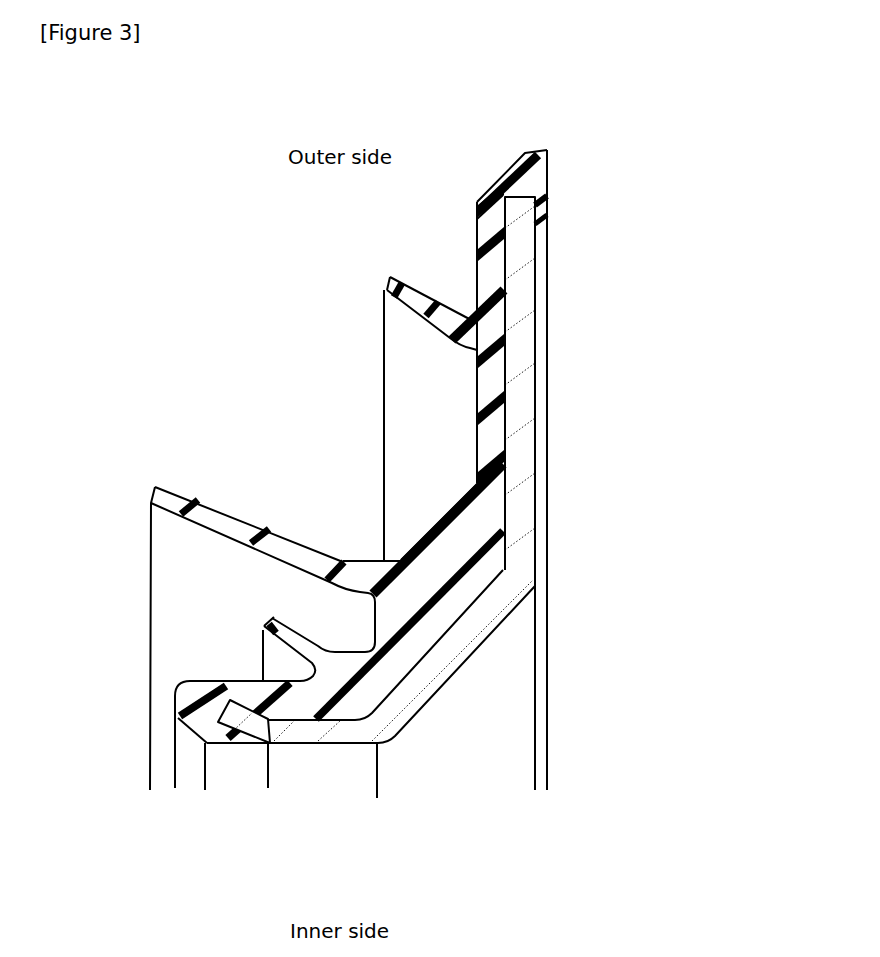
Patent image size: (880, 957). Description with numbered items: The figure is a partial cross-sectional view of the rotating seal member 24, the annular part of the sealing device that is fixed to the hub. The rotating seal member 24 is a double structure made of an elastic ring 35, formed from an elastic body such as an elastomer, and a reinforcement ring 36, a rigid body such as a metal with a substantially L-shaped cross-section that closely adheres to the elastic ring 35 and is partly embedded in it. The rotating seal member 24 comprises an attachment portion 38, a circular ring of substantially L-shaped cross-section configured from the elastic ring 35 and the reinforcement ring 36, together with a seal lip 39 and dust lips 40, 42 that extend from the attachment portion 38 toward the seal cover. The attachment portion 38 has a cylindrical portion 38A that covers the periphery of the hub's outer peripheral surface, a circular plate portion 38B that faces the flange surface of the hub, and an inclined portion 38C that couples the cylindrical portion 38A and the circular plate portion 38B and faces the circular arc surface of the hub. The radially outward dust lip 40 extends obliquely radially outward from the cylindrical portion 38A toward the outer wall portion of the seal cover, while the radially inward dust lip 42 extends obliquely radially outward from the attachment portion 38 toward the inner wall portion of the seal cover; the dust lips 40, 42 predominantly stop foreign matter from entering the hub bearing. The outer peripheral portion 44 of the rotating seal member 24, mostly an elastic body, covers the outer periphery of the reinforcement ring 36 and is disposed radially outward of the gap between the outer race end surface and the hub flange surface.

The rotating seal member 24 is at (562, 500).
The elastic ring 35 is at (478, 439).
The reinforcement ring 36 is at (527, 347).
The attachment portion 38 is at (423, 673).
The cylindrical portion 38A is at (362, 702).
The circular plate portion 38B is at (527, 521).
The inclined portion 38C is at (470, 626).
The seal lip 39 is at (295, 647).
The dust lip 40 is at (412, 301).
The dust lip 42 is at (216, 518).
The outer peripheral portion 44 is at (545, 147).